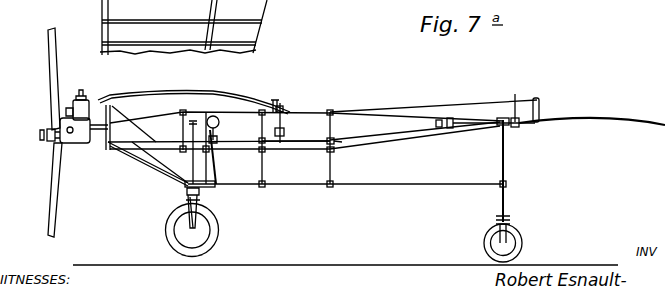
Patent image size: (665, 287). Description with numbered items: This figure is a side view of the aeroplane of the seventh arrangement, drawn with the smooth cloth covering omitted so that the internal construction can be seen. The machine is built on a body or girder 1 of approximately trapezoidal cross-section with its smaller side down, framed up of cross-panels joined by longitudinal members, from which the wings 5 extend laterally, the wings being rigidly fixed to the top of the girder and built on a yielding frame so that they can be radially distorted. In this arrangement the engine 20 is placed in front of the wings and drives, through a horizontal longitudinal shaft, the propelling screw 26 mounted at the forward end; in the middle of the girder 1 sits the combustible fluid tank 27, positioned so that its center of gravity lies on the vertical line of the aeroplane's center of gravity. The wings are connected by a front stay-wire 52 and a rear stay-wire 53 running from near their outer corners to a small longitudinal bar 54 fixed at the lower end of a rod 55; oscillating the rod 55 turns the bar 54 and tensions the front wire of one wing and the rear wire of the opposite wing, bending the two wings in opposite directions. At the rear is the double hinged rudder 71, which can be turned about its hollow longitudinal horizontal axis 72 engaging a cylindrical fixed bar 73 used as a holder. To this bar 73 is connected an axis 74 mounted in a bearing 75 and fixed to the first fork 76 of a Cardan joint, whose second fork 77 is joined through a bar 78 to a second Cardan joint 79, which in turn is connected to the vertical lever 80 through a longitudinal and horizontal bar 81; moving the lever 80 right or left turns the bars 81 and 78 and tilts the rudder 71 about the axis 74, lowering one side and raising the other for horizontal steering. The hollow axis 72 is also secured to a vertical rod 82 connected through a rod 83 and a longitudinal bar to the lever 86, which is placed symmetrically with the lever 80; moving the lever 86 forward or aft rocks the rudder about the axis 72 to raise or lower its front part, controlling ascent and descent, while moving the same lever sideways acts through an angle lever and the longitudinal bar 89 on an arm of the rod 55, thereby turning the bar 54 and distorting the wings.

The body or girder 1 is at (304, 146).
The wings 5 is at (200, 95).
The engine 20 is at (80, 146).
The propelling screw 26 is at (50, 49).
The combustible fluid tank 27 is at (220, 122).
The front stay-wire 52 is at (165, 160).
The rear stay-wire 53 is at (222, 185).
The longitudinal bar 54 is at (205, 190).
The rod 55 is at (186, 184).
The double hinged rudder 71 is at (590, 117).
The longitudinal horizontal axis 72 is at (505, 130).
The cylindrical fixed bar 73 is at (518, 127).
The axis 74 is at (478, 125).
The bearing 75 is at (515, 94).
The first fork of Cardan joint 76 is at (450, 129).
The second fork of Cardan joint 77 is at (438, 127).
The bar 78 is at (376, 135).
The second Cardan joint 79 is at (336, 144).
The vertical lever 80 is at (274, 100).
The longitudinal and horizontal bar 81 is at (310, 142).
The vertical rod 82 is at (540, 104).
The rod 83 is at (348, 113).
The lever 86 is at (285, 115).
The longitudinal bar 89 is at (214, 143).